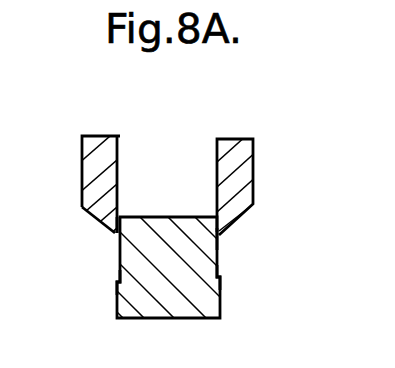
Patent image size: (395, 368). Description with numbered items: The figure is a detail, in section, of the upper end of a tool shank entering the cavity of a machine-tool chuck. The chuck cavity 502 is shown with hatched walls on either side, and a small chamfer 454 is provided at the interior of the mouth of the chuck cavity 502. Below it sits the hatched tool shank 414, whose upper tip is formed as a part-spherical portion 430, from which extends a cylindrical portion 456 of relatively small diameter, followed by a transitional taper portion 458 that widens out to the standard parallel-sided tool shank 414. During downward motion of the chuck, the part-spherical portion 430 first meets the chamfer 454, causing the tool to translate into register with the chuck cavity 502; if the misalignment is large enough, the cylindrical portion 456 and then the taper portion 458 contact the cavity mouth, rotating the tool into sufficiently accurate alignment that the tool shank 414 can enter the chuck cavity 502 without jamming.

The chuck cavity 502 is at (117, 160).
The tool shank 414 is at (122, 312).
The part-spherical portion 430 is at (120, 240).
The transitional taper portion 458 is at (121, 286).
The chamfer 454 is at (217, 236).
The cylindrical portion 456 is at (218, 270).